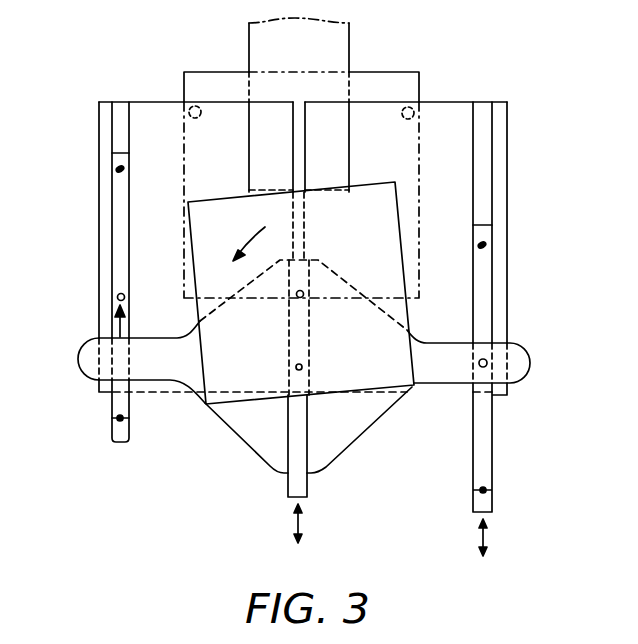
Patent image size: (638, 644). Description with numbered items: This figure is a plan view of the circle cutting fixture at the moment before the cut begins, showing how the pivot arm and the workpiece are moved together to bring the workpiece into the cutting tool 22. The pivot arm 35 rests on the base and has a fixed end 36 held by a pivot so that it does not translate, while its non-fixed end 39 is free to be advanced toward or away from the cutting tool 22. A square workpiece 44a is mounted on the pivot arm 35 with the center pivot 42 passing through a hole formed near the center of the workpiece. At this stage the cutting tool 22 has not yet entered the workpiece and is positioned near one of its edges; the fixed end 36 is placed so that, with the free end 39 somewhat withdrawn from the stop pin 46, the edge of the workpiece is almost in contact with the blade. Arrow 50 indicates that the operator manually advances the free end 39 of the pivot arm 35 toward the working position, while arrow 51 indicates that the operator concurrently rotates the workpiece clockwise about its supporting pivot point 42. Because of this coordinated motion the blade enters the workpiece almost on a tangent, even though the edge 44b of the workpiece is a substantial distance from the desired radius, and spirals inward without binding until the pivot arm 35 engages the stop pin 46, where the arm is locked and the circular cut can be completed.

The cutting tool 22 is at (300, 188).
The pivot arm 35 is at (365, 435).
The fixed end of the pivot arm 36 is at (480, 367).
The non-fixed end of the pivot arm 39 is at (93, 372).
The center pivot 42 is at (290, 295).
The square workpiece 44a is at (283, 430).
The edge of the workpiece 44b is at (193, 212).
The stop pin 46 is at (117, 297).
The arrow 50 is at (119, 328).
The arrow 51 is at (237, 243).